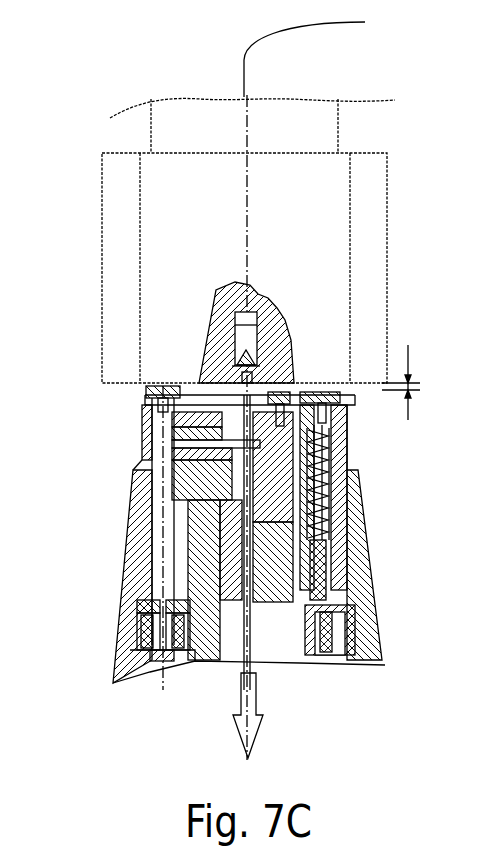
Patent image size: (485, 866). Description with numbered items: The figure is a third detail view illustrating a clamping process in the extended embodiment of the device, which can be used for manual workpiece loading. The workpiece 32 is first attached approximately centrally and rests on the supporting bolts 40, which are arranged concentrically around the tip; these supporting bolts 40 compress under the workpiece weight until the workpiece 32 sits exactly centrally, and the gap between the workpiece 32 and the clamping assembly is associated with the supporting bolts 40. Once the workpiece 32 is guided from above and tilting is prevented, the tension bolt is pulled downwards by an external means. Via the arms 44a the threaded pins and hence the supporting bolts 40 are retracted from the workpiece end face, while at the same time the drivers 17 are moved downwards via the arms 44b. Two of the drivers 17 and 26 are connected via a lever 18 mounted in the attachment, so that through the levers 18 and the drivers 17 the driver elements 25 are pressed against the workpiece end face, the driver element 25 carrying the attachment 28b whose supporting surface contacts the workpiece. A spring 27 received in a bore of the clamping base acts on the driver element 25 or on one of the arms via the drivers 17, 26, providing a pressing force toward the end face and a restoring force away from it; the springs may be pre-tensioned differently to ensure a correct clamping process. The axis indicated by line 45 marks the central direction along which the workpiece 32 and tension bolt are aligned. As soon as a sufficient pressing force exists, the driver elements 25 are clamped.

The central axis 45 is at (319, 53).
The workpiece 32 is at (127, 270).
The supporting bolts 40 is at (343, 393).
The attachment 28b is at (148, 395).
The driver element 25 is at (172, 444).
The driver 26 is at (143, 609).
The lever 18 is at (145, 633).
The spring 27 is at (145, 661).
The arms 44a is at (340, 548).
The arms 44b is at (337, 600).
The driver 17 is at (345, 617).